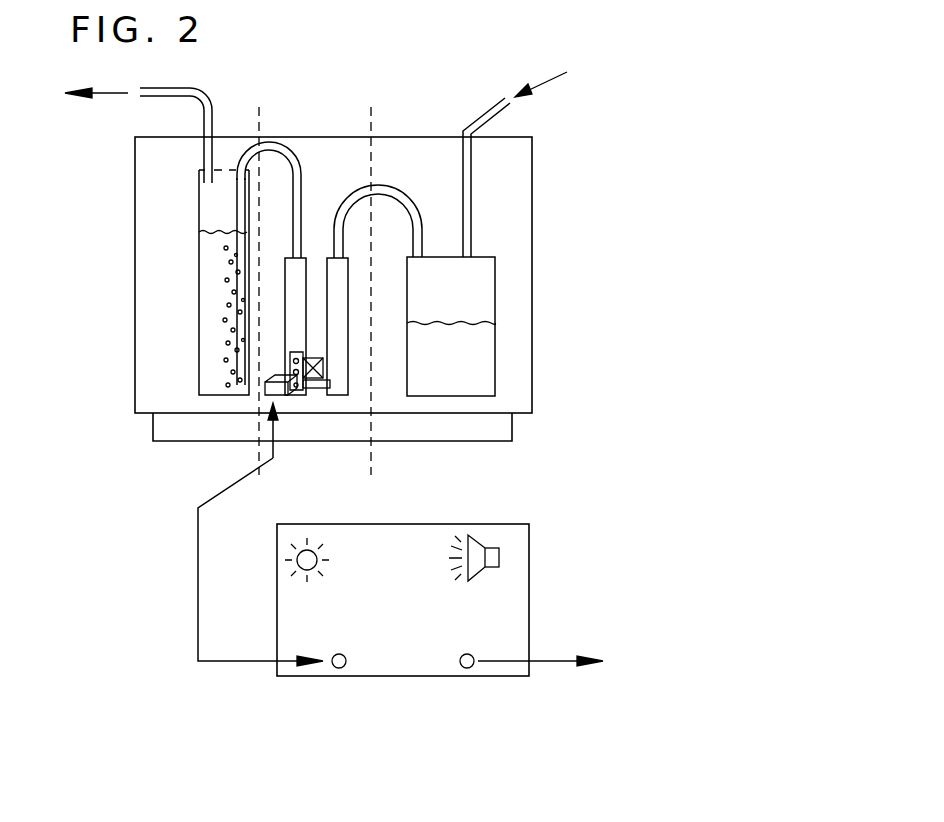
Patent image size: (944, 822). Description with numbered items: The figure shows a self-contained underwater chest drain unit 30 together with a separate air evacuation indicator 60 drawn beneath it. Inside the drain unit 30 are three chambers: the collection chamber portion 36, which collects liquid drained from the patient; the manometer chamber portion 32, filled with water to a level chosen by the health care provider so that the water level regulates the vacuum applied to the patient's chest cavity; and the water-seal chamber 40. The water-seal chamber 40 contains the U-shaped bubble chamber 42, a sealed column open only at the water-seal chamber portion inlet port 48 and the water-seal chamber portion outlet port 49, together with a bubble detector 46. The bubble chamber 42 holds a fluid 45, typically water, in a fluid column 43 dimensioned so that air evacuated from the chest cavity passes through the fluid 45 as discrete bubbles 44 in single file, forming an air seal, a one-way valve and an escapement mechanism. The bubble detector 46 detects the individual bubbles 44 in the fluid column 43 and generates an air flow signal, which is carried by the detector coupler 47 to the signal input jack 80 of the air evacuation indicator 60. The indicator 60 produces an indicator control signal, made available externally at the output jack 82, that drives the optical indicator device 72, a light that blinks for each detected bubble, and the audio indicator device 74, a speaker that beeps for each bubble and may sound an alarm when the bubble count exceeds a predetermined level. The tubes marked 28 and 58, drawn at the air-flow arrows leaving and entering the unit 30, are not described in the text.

The air outlet tube 28 is at (172, 98).
The self-contained underwater chest drain unit 30 is at (338, 82).
The manometer chamber portion 32 is at (175, 278).
The collection chamber portion 36 is at (500, 300).
The water-seal chamber 40 is at (338, 148).
The bubble chamber 42 is at (342, 342).
The fluid column 43 is at (288, 328).
The bubbles 44 is at (297, 361).
The fluid 45 is at (283, 360).
The bubble detector 46 is at (273, 370).
The detector coupler 47 is at (208, 500).
The water-seal chamber portion inlet port 48 is at (350, 258).
The water-seal chamber portion outlet port 49 is at (303, 257).
The air inlet tube 58 is at (487, 110).
The air evacuation indicator 60 is at (148, 564).
The optical indicator device 72 is at (302, 564).
The audio indicator device 74 is at (500, 558).
The signal input jack 80 is at (337, 669).
The output jack 82 is at (471, 669).